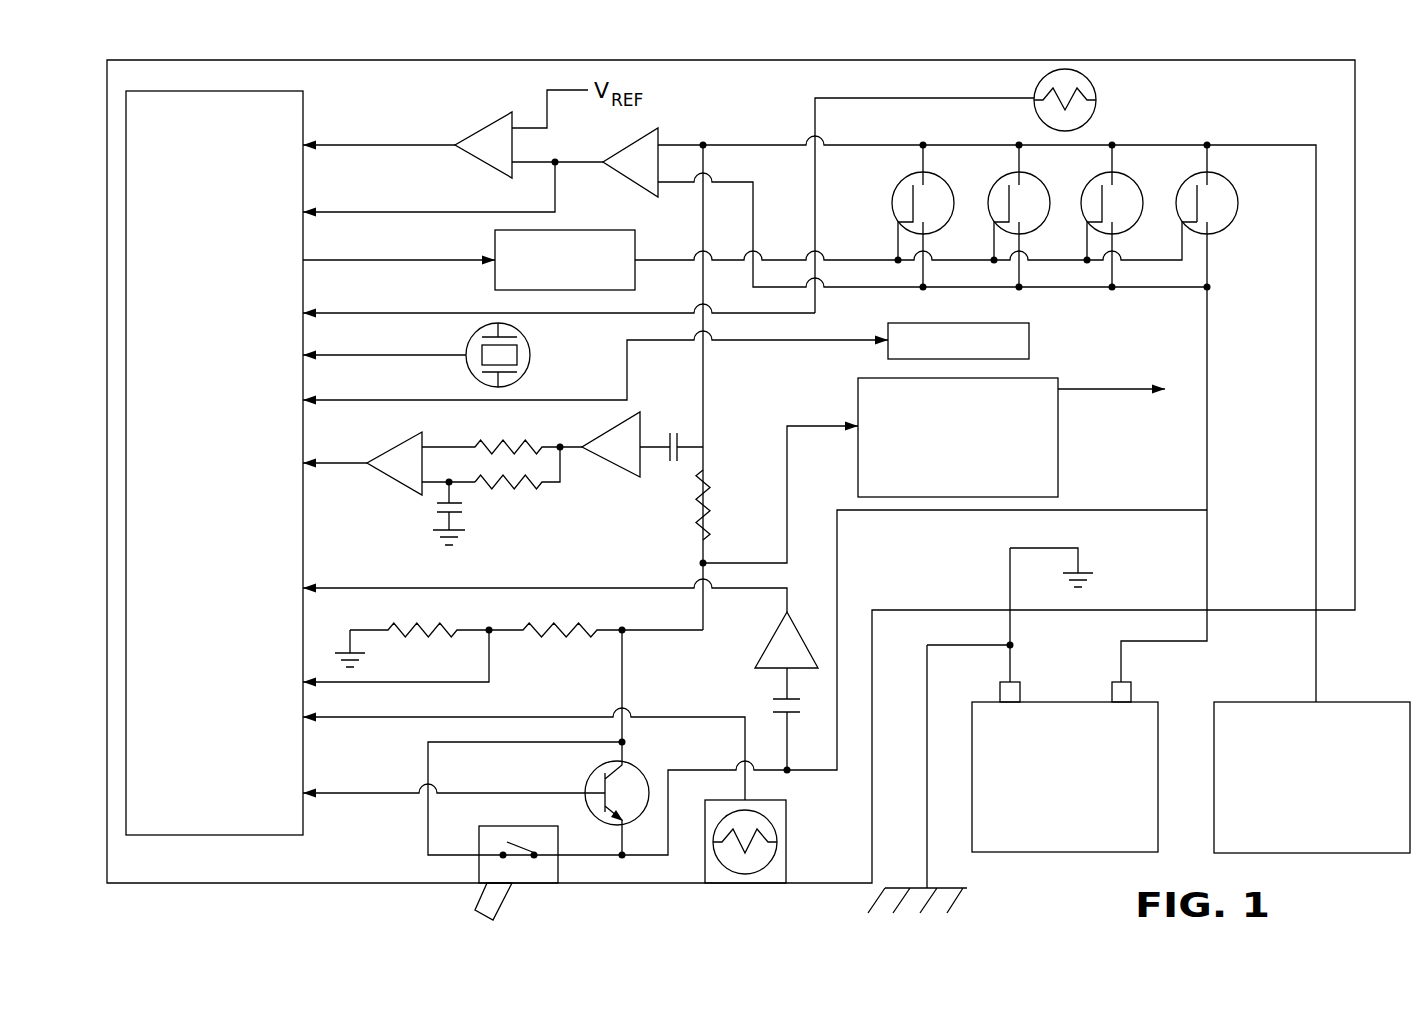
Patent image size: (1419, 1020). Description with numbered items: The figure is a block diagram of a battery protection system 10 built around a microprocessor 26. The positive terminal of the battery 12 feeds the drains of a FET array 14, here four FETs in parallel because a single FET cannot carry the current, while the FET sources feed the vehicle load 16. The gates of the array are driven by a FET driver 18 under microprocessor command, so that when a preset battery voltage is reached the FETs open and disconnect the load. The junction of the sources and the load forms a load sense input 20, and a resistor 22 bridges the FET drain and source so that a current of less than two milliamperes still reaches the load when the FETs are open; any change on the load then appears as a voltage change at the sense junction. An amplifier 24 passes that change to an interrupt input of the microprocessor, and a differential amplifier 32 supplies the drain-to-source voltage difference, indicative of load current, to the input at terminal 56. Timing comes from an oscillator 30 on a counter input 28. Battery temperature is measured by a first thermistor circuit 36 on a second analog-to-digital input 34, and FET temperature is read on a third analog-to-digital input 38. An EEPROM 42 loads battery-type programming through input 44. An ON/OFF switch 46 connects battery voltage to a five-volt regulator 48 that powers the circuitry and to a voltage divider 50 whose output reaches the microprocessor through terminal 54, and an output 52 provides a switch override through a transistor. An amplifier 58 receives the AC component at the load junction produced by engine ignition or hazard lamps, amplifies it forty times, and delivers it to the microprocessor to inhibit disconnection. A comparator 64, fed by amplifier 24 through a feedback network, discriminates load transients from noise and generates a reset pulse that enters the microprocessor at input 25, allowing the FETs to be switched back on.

The battery protection system 10 is at (1364, 172).
The battery 12 is at (1130, 853).
The FET array 14 is at (1147, 165).
The vehicle load 16 is at (1385, 856).
The FET driver 18 is at (622, 230).
The load sense input 20 is at (1298, 432).
The resistor 22 is at (715, 520).
The amplifier U2 24 is at (625, 475).
The microcontroller input 25 is at (313, 462).
The microprocessor 26 is at (303, 112).
The counter input 28 is at (363, 354).
The oscillator 30 is at (522, 345).
The differential amplifier 32 is at (632, 140).
The second analog-to-digital input 34 is at (502, 522).
The first thermistor circuit 36 is at (705, 865).
The third analog-to-digital input 38 is at (537, 312).
The EEPROM 42 is at (888, 352).
The input 44 is at (574, 372).
The ON/OFF switch 46 is at (478, 862).
The 5 volt regulator 48 is at (1058, 435).
The voltage divider 50 is at (567, 640).
The output 52 is at (422, 792).
The terminal 54 is at (374, 663).
The terminal 56 is at (407, 194).
The amplifier 58 is at (762, 645).
The comparator 64 is at (405, 487).